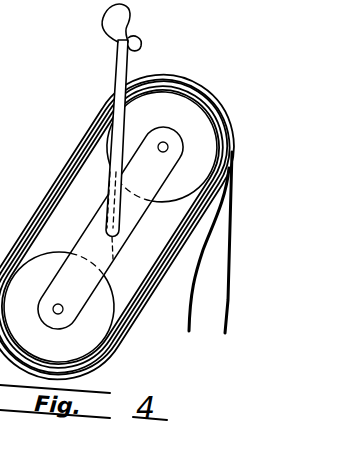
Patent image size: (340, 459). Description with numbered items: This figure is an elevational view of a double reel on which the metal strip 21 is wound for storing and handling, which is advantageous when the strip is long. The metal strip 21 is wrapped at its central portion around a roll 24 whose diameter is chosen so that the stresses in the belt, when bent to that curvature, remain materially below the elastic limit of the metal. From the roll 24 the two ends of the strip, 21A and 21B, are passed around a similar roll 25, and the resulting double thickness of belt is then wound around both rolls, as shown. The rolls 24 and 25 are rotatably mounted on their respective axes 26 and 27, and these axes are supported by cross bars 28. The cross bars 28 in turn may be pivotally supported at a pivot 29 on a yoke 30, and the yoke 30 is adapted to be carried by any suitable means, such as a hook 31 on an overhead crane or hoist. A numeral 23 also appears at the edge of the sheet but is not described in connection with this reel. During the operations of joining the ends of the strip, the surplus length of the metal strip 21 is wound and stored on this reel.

The metal strip 21 is at (62, 182).
The belt end 21A is at (187, 318).
The belt end 21B is at (227, 320).
The roller 23 is at (8, 19).
The roll 24 is at (162, 147).
The roll 25 is at (59, 307).
The axis 26 is at (168, 147).
The axis 27 is at (63, 309).
The cross bars 28 is at (95, 228).
The pivot 29 is at (120, 231).
The yoke 30 is at (118, 77).
The hook 31 is at (131, 23).